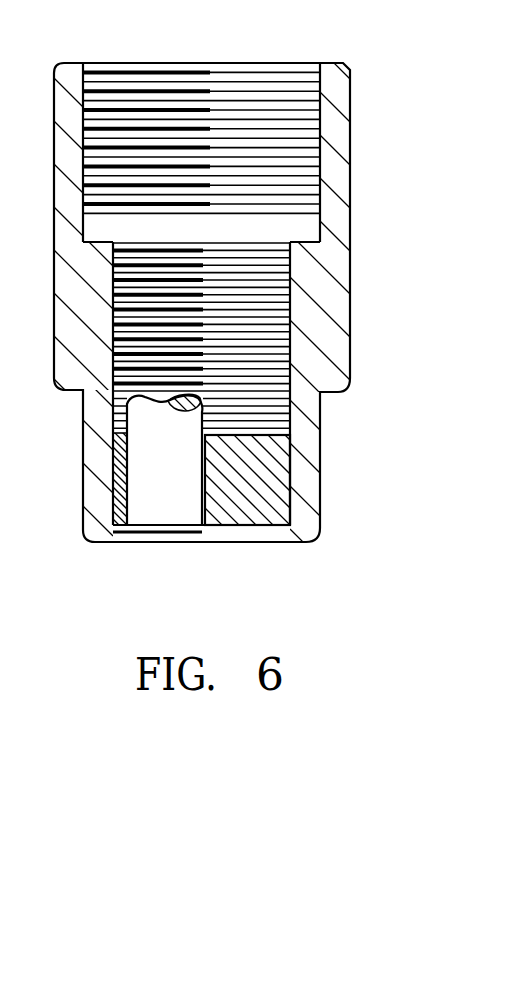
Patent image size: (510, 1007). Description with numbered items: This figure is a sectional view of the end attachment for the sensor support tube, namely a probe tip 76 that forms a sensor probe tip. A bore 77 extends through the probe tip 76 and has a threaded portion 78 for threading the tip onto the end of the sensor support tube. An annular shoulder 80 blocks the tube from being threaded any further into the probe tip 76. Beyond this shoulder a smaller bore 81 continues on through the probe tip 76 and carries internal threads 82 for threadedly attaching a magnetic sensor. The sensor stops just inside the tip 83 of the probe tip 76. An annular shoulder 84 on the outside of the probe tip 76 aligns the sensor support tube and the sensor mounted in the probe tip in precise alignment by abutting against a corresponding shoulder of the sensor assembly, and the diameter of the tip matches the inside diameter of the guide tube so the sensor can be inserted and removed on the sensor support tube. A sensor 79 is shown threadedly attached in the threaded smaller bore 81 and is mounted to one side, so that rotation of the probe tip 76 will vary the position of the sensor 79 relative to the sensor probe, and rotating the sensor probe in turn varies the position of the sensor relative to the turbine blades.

The probe tip 76 is at (362, 66).
The bore 77 is at (258, 74).
The threaded portion 78 is at (318, 153).
The sensor 79 is at (157, 479).
The annular shoulder 80 is at (310, 237).
The smaller bore 81 is at (250, 377).
The internal threads 82 is at (280, 293).
The tip 83 is at (232, 512).
The annular shoulder 84 is at (334, 394).